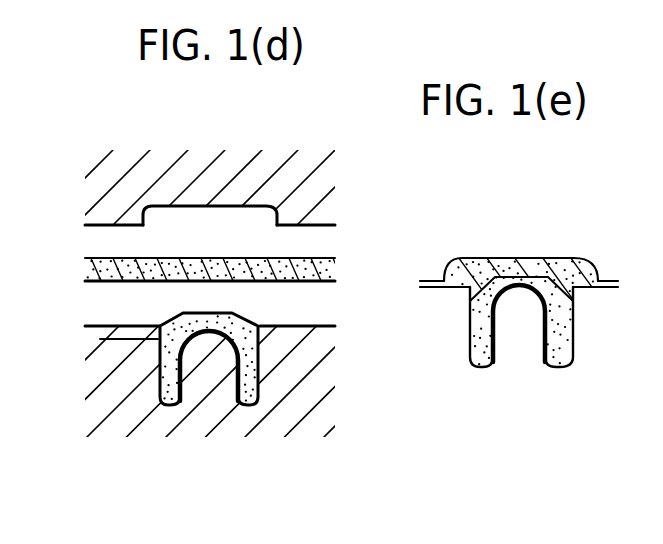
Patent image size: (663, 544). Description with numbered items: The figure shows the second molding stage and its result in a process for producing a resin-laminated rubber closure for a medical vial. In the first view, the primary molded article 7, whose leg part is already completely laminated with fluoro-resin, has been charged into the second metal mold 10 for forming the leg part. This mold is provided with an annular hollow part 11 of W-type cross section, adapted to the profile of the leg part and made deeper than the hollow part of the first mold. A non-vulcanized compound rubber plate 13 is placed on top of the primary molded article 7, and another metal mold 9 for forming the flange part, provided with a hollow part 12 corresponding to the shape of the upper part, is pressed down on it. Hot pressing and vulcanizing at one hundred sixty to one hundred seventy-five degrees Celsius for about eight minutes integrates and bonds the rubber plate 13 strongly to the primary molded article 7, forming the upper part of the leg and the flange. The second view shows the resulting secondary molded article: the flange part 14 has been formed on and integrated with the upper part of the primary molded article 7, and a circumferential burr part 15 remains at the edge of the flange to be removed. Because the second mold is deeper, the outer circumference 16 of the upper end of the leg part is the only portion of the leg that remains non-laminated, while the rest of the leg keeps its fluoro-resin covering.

The primary molded article 7 is at (160, 402).
The metal mold for forming a flange part 9 is at (260, 167).
The second metal mold for forming a leg part 10 is at (282, 412).
The annular hollow part 11 is at (157, 337).
The hollow part 12 is at (197, 216).
The non-vulcanized compound rubber plate 13 is at (187, 258).
The flange part 14 is at (471, 268).
The burr part 15 is at (603, 278).
The outer circumference of the upper end of the leg part 16 is at (475, 289).